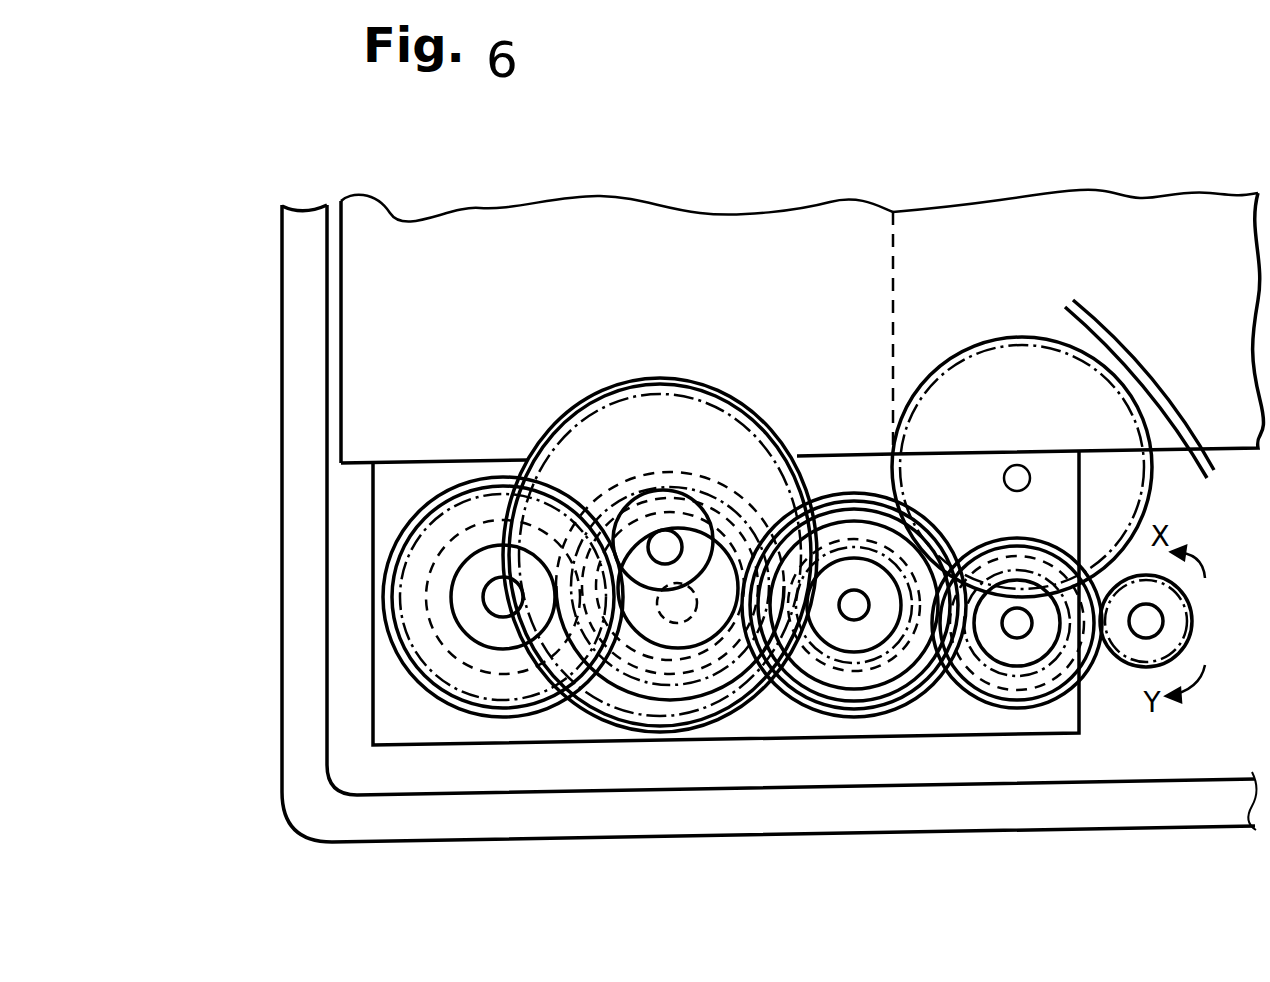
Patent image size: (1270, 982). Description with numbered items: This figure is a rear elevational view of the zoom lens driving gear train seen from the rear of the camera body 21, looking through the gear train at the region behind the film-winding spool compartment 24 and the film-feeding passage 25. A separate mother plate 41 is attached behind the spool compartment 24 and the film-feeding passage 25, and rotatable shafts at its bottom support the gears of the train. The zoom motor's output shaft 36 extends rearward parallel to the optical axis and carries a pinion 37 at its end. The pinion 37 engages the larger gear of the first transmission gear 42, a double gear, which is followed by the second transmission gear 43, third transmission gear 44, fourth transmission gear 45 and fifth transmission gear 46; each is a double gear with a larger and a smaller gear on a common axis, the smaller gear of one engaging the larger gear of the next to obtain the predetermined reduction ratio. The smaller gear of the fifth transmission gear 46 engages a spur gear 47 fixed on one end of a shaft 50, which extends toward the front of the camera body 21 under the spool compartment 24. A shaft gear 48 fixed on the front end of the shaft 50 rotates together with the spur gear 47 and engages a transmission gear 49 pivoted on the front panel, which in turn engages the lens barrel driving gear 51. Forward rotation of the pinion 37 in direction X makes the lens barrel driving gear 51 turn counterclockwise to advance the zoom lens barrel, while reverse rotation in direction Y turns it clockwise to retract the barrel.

The camera body 21 is at (293, 338).
The film-winding spool compartment 24 is at (687, 233).
The film-feeding passage 25 is at (1052, 210).
The output shaft 36 is at (1150, 619).
The pinion 37 is at (1192, 590).
The mother plate 41 is at (402, 499).
The first transmission gear 42 is at (1037, 687).
The second transmission gear 43 is at (885, 713).
The third transmission gear 44 is at (647, 680).
The fourth transmission gear 45 is at (484, 697).
The fifth transmission gear 46 is at (722, 705).
The spur gear 47 is at (817, 500).
The shaft gear 48 is at (868, 525).
The transmission gear 49 is at (964, 405).
The shaft 50 is at (832, 590).
The lens barrel driving gear 51 is at (1062, 312).